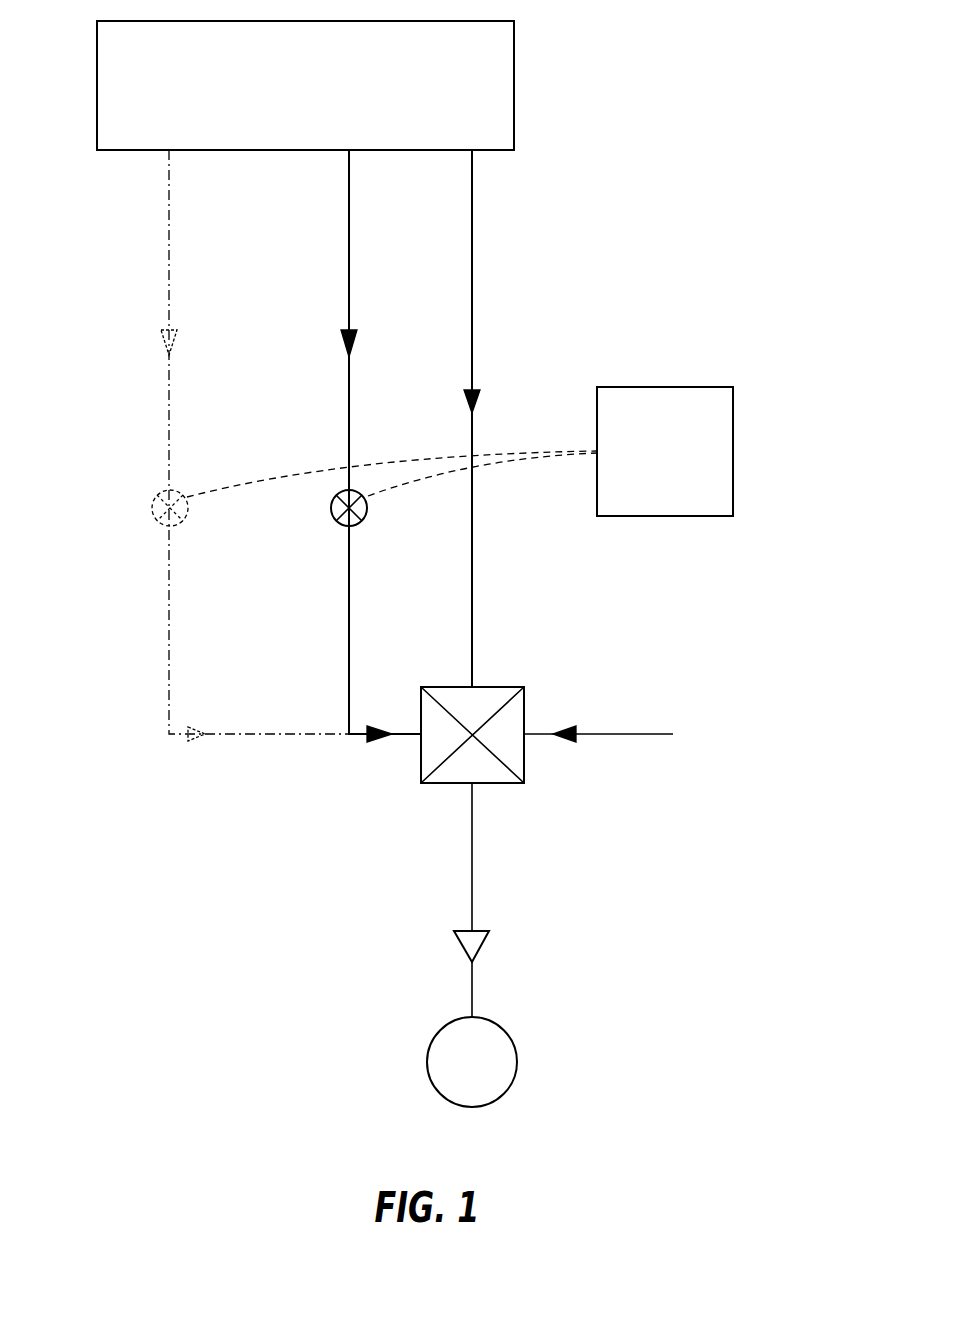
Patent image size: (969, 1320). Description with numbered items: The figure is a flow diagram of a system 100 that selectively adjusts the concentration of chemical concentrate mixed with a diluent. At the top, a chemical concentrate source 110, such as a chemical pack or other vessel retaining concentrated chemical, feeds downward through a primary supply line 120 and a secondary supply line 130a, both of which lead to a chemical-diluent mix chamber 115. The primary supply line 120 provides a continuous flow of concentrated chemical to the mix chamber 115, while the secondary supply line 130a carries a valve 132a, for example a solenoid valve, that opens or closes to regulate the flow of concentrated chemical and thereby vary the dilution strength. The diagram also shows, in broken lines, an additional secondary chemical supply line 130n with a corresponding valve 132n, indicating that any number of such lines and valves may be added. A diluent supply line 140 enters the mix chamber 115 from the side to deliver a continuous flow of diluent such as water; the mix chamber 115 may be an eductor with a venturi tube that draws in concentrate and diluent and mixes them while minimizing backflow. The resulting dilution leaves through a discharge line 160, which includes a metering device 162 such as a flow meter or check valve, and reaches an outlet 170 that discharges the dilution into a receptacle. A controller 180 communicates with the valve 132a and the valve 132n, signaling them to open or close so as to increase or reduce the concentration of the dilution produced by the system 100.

The system 100 is at (714, 144).
The chemical concentrate source 110 is at (514, 70).
The chemical-diluent mix chamber 115 is at (494, 683).
The primary supply line 120 is at (472, 347).
The secondary supply line 130a is at (348, 292).
The additional secondary chemical supply line 130n is at (167, 297).
The valve 132a is at (330, 515).
The corresponding valve 132n is at (140, 508).
The diluent supply line 140 is at (651, 733).
The discharge line 160 is at (472, 843).
The metering device 162 is at (482, 945).
The outlet 170 is at (507, 1032).
The controller 180 is at (733, 435).